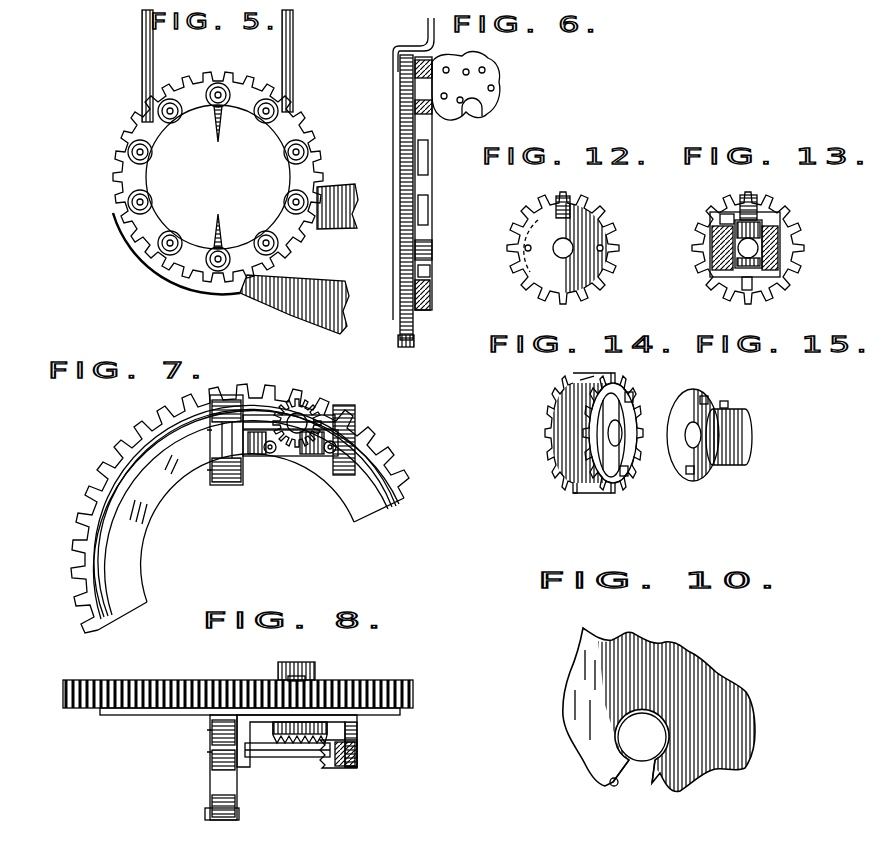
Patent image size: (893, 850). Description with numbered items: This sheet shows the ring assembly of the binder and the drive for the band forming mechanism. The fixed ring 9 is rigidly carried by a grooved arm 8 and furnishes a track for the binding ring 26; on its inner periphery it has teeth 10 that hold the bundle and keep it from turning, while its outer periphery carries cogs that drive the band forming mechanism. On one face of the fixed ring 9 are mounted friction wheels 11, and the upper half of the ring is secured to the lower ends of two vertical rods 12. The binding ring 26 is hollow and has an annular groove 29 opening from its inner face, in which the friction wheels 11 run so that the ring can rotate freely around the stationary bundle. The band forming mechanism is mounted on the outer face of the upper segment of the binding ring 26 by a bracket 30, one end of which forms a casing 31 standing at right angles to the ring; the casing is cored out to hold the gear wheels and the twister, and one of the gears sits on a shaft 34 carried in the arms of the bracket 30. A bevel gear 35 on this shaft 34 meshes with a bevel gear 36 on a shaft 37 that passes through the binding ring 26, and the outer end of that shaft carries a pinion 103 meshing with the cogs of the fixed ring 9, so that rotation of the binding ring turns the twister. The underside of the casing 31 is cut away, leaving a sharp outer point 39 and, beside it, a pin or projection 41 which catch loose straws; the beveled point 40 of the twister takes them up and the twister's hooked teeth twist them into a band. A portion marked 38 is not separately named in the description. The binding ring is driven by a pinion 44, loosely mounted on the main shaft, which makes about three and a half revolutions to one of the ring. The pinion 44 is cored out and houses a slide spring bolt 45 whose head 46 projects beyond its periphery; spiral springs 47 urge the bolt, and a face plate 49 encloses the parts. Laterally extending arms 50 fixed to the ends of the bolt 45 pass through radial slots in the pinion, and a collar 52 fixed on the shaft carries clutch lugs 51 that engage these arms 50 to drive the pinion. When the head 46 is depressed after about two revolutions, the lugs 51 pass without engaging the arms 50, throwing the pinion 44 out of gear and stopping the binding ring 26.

In FIG. 5, the grooved arm 8 is at (303, 326).
In FIG. 6, the grooved arm 8 is at (405, 331).
In FIG. 5, the fixed ring 9 is at (150, 230).
In FIG. 6, the fixed ring 9 is at (398, 227).
In FIG. 5, the teeth 10 is at (215, 133).
In FIG. 5, the friction wheels 11 is at (312, 145).
In FIG. 6, the friction wheels 11 is at (432, 277).
In FIG. 5, the vertical rods 12 is at (142, 50).
In FIG. 6, the vertical rods 12 is at (393, 82).
In FIG. 6, the binding ring 26 is at (433, 220).
In FIG. 7, the binding ring 26 is at (153, 532).
In FIG. 8, the binding ring 26 is at (137, 663).
In FIG. 6, the annular groove 29 is at (430, 293).
In FIG. 7, the bracket 30 is at (333, 460).
In FIG. 8, the bracket 30 is at (357, 723).
In FIG. 6, the casing 31 is at (493, 72).
In FIG. 7, the casing 31 is at (213, 485).
In FIG. 8, the casing 31 is at (213, 782).
In FIG. 7, the shaft 34 is at (258, 417).
In FIG. 8, the shaft 34 is at (293, 760).
In FIG. 7, the bevel gear 35 is at (320, 415).
In FIG. 8, the bevel gear 35 is at (323, 770).
In FIG. 7, the bevel gear 36 is at (305, 398).
In FIG. 8, the bevel gear 36 is at (323, 710).
In FIG. 8, the shaft 37 is at (298, 662).
In FIG. 10, the block 38 is at (663, 788).
In FIG. 10, the outer point of the casing 39 is at (617, 788).
In FIG. 10, the point of the twister 40 is at (643, 788).
In FIG. 8, the pin or projection 41 is at (237, 812).
In FIG. 10, the pin or projection 41 is at (608, 782).
In FIG. 12, the pinion 44 is at (602, 215).
In FIG. 13, the pinion 44 is at (802, 237).
In FIG. 14, the pinion 44 is at (552, 423).
In FIG. 13, the slide spring bolt 45 is at (765, 218).
In FIG. 12, the head 46 is at (565, 198).
In FIG. 13, the head 46 is at (747, 195).
In FIG. 14, the head 46 is at (587, 375).
In FIG. 13, the spiral springs 47 is at (700, 250).
In FIG. 12, the face plate 49 is at (543, 272).
In FIG. 13, the laterally extending arms 50 is at (720, 212).
In FIG. 14, the laterally extending arms 50 is at (633, 395).
In FIG. 15, the lugs 51 is at (710, 397).
In FIG. 15, the collar 52 is at (743, 440).
In FIG. 8, the pinion 103 is at (277, 668).